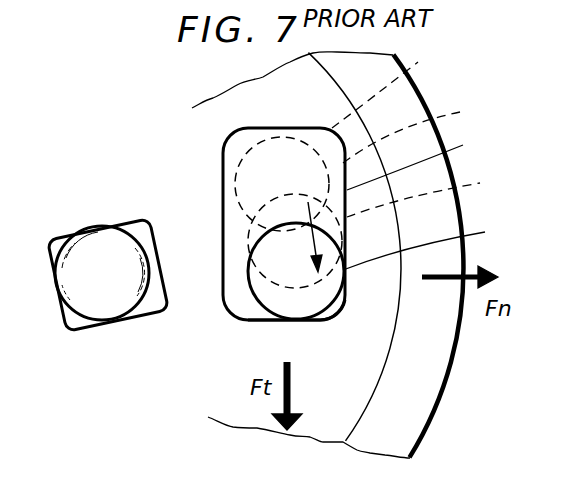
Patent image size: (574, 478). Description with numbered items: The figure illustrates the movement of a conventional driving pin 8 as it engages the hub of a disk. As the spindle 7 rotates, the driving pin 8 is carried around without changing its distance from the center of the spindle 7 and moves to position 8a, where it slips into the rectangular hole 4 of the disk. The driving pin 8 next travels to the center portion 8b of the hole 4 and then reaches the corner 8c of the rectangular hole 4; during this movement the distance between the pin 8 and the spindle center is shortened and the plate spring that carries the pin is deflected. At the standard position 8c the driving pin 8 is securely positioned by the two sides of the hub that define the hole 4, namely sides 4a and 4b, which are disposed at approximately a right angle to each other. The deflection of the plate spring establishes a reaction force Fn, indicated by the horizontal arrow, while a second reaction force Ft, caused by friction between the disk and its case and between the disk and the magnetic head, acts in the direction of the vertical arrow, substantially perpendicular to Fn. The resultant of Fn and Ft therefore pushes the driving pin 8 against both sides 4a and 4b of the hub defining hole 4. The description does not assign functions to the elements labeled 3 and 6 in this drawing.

The holder 3 is at (145, 218).
The rectangular hole 4 is at (353, 224).
The side of the hub defining hole 4a is at (346, 287).
The side of the hub defining hole 4b is at (317, 321).
The ring 6 is at (428, 110).
The spindle 7 is at (80, 300).
The driving pin 8 is at (394, 247).
The position of driving pin 8a is at (393, 85).
The center portion of hole 8b is at (432, 194).
The corner of rectangular hole 8c is at (429, 247).